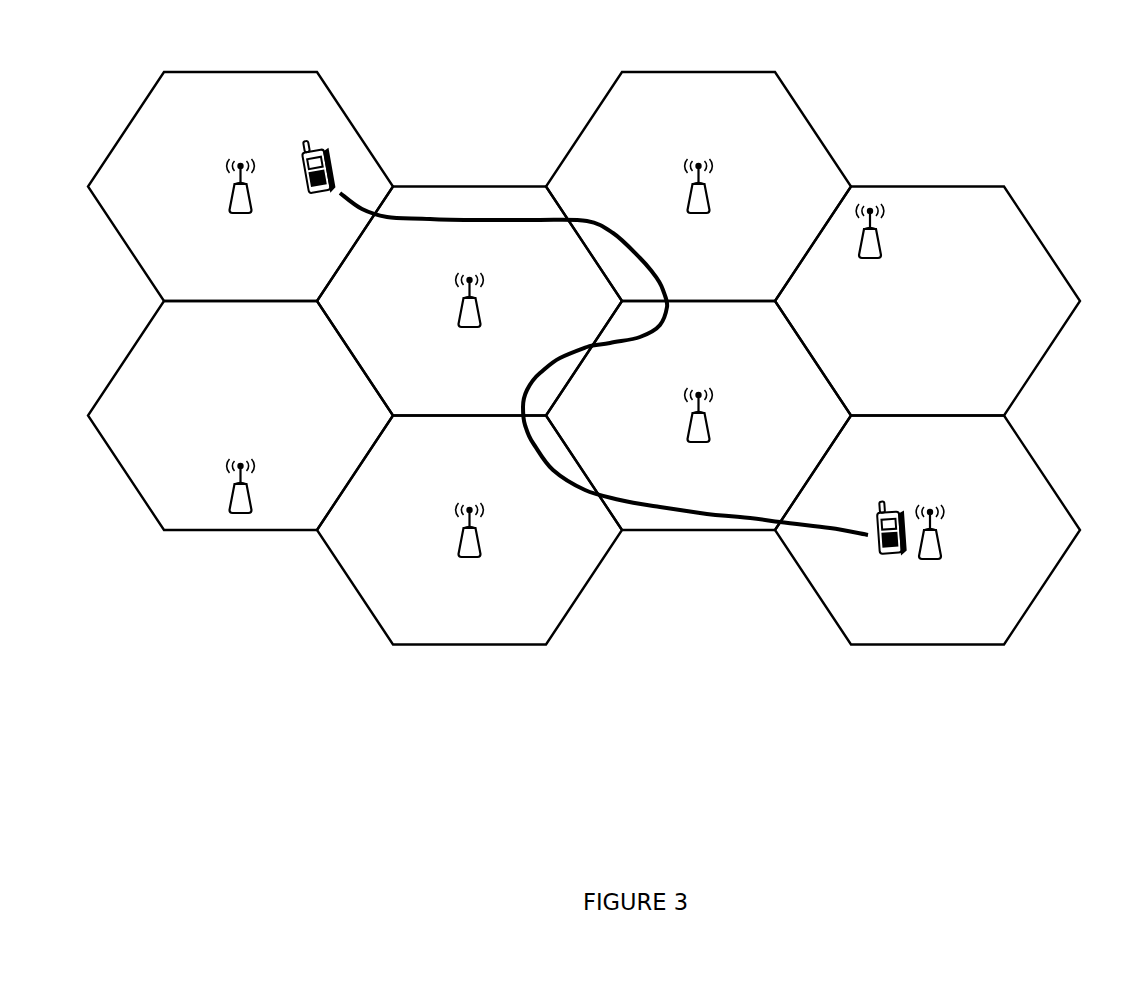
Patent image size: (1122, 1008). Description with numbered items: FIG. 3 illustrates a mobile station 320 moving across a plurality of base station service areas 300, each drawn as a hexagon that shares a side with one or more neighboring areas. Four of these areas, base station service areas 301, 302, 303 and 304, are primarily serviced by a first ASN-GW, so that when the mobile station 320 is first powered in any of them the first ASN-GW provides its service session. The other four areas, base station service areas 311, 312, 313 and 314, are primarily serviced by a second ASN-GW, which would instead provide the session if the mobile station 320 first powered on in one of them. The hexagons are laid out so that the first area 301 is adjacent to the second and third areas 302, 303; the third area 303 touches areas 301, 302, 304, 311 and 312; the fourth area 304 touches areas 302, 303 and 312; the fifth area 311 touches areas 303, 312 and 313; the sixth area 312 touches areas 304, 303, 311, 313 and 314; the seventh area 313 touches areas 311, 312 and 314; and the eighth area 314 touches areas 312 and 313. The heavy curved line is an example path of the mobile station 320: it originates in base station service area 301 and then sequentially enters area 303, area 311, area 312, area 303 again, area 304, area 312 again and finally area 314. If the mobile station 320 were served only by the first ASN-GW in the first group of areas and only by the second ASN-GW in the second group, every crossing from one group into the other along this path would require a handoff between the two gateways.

The base station service areas 300 is at (98, 30).
The base station service area A1 301 is at (240, 186).
The base station service area A2 302 is at (240, 415).
The base station service area A3 303 is at (469, 301).
The base station service area A4 304 is at (469, 530).
The base station service area B1 311 is at (698, 186).
The base station service area B2 312 is at (698, 415).
The base station service area B3 313 is at (927, 301).
The base station service area B4 314 is at (927, 530).
The mobile station 320 is at (320, 152).